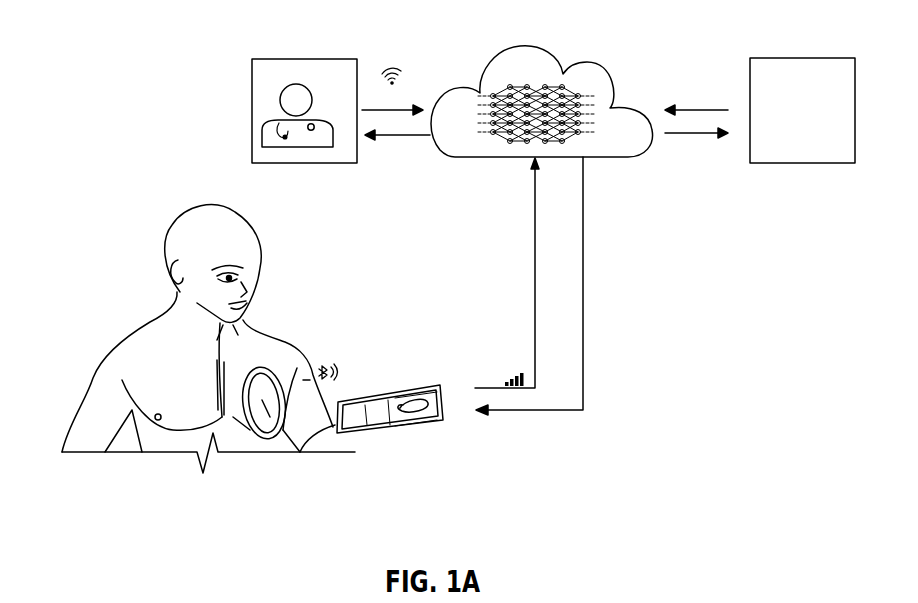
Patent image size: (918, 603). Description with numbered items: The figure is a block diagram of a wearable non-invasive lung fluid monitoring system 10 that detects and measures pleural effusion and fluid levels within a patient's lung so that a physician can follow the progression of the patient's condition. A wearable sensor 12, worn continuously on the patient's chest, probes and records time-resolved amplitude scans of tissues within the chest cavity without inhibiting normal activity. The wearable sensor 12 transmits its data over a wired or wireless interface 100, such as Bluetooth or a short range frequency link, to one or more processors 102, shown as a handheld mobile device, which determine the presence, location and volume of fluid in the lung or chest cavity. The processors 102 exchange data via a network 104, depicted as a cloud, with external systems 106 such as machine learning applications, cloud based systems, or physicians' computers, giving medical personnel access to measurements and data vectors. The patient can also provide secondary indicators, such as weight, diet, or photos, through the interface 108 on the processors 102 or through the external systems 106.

The wearable non-invasive lung fluid monitoring system 10 is at (673, 53).
The wearable sensor 12 is at (287, 430).
The wired or wireless interface 100 is at (326, 365).
The processors 102 is at (433, 385).
The network 104 is at (553, 62).
The external systems 106 is at (300, 58).
The interface 108 is at (382, 405).